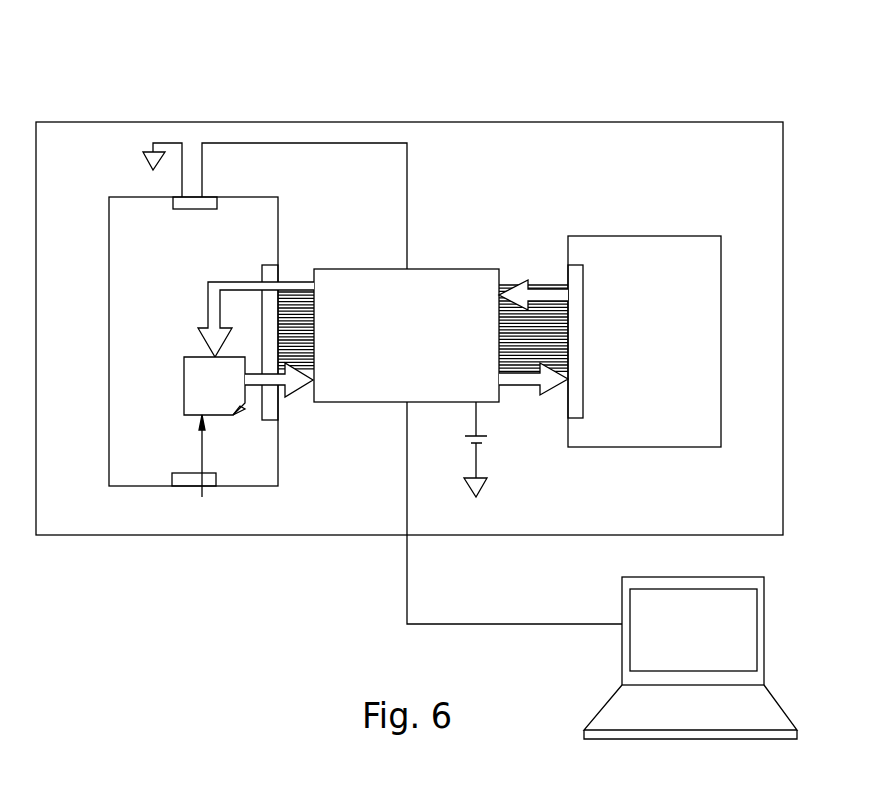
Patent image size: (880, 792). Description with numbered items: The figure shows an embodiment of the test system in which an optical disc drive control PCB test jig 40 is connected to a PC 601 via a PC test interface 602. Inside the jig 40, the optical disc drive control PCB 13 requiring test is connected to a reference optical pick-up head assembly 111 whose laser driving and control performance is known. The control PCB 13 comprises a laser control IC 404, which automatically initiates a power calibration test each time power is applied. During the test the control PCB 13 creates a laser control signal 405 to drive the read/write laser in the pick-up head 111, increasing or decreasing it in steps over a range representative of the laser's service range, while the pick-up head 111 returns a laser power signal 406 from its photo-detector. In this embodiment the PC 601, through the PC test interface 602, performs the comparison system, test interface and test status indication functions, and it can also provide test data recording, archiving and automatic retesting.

The optical disc drive control PCB test jig 40 is at (772, 106).
The optical disc drive control PCB 13 is at (109, 470).
The reference optical pick-up head assembly 111 is at (620, 235).
The PC test interface 602 is at (370, 403).
The PC 601 is at (764, 600).
The laser control IC 404 is at (214, 440).
The laser control signal 405 is at (300, 393).
The laser power signal 406 is at (538, 288).